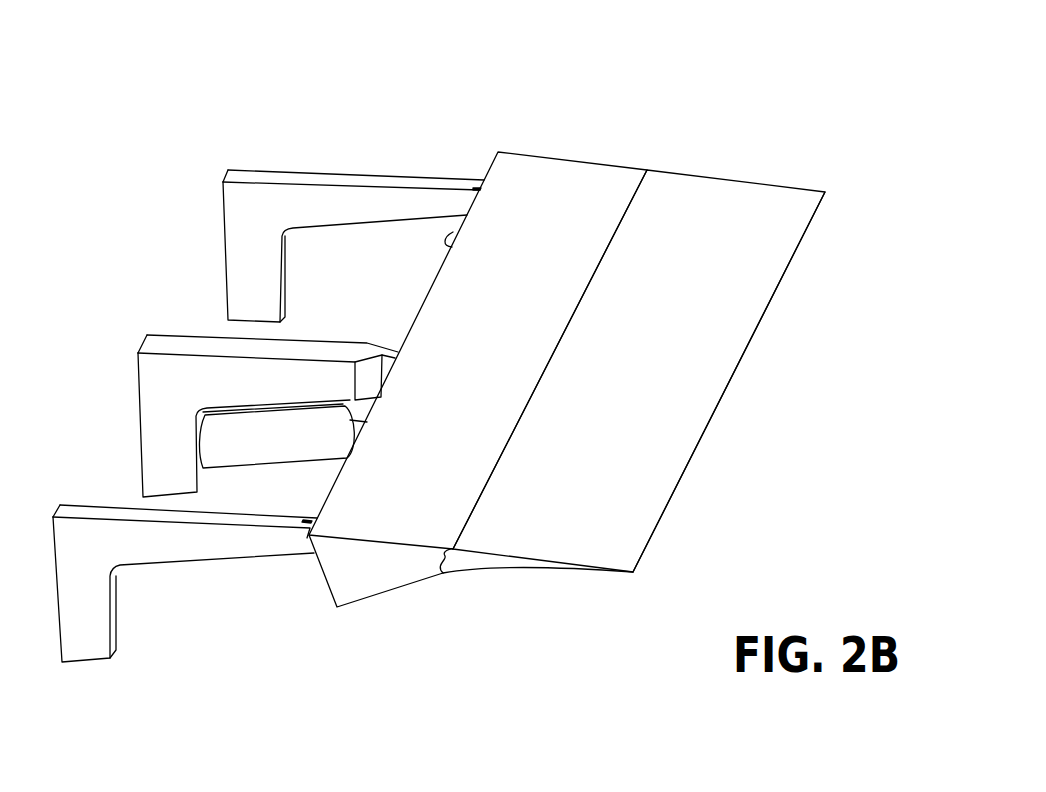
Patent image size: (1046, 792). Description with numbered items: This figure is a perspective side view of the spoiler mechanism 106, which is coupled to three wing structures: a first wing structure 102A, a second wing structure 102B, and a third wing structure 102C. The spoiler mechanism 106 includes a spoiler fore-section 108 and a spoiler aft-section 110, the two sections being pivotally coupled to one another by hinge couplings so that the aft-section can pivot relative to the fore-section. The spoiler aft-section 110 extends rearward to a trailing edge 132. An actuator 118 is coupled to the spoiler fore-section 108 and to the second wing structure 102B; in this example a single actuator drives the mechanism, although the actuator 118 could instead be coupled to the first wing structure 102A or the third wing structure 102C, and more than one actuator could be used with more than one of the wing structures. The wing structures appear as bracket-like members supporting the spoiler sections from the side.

The spoiler mechanism 106 is at (397, 89).
The spoiler fore-section 108 is at (537, 170).
The spoiler aft-section 110 is at (712, 185).
The trailing edge 132 is at (810, 281).
The first wing structure 102A is at (118, 505).
The second wing structure 102B is at (168, 348).
The third wing structure 102C is at (283, 170).
The actuator 118 is at (232, 462).